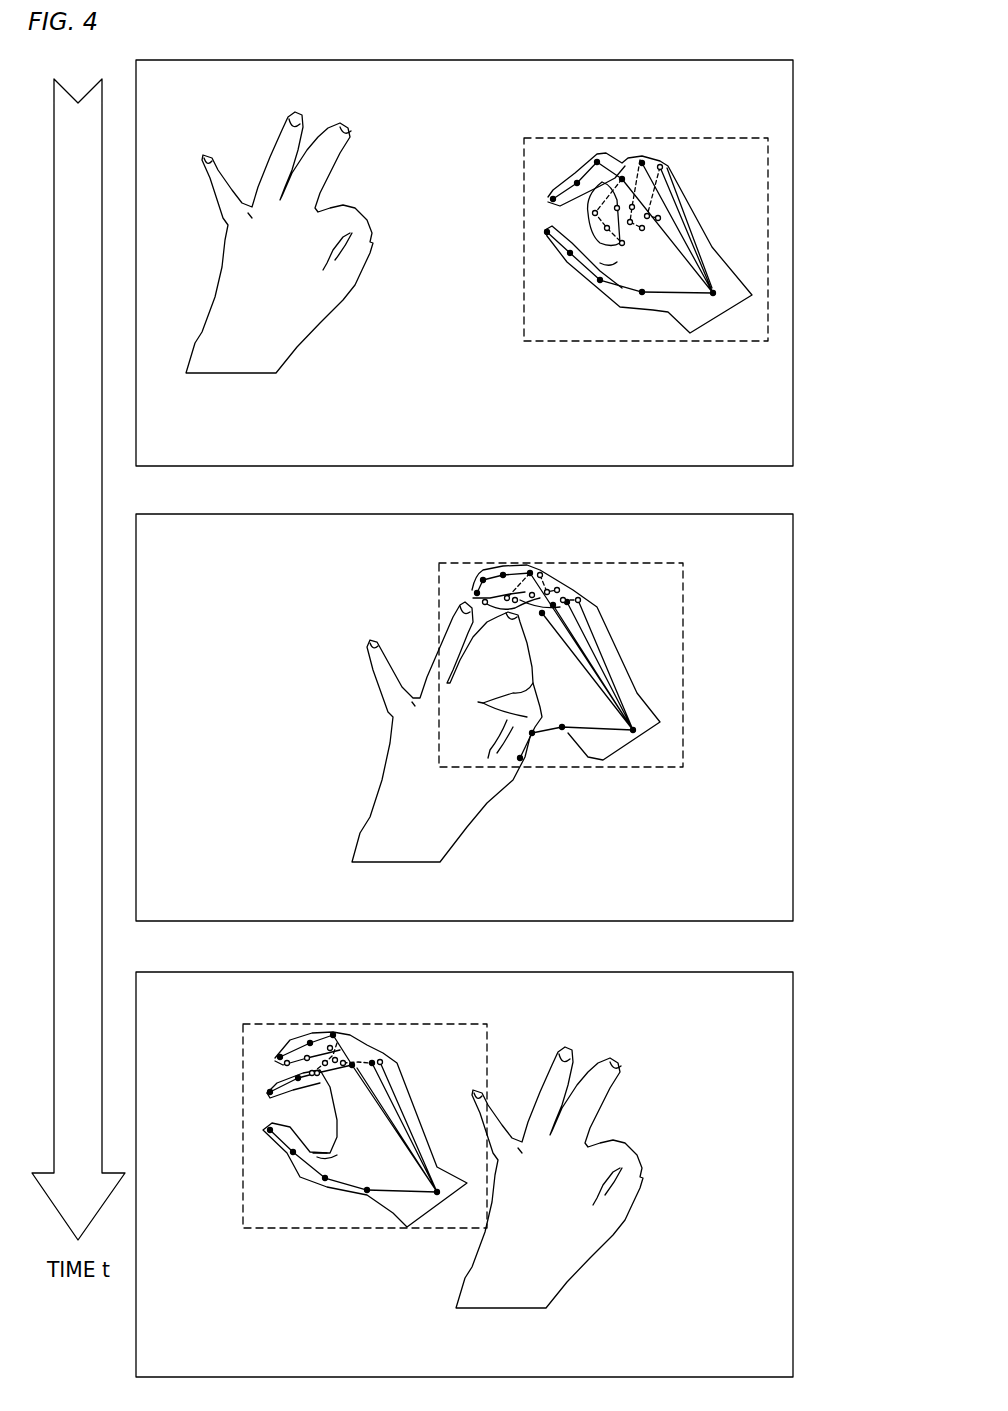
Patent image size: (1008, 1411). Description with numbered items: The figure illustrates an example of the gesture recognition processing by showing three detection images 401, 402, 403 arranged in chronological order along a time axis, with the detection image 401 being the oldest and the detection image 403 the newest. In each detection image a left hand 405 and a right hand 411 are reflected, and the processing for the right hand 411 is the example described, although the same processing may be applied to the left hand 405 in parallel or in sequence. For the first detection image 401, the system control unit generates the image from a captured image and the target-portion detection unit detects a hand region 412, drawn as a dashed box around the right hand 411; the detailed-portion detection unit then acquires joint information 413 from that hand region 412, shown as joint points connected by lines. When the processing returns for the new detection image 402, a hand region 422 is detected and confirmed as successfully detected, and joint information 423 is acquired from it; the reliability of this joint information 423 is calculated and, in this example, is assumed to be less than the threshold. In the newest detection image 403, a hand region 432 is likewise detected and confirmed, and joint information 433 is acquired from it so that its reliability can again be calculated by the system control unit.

The detection image 401 is at (722, 60).
The detection image 402 is at (722, 514).
The detection image 403 is at (722, 972).
The left hand 405 is at (237, 144).
The right hand 411 is at (700, 175).
The hand region 412 is at (722, 138).
The joint information 413 is at (692, 238).
The hand region 422 is at (620, 563).
The joint information 423 is at (603, 650).
The hand region 432 is at (446, 1024).
The joint information 433 is at (412, 1128).